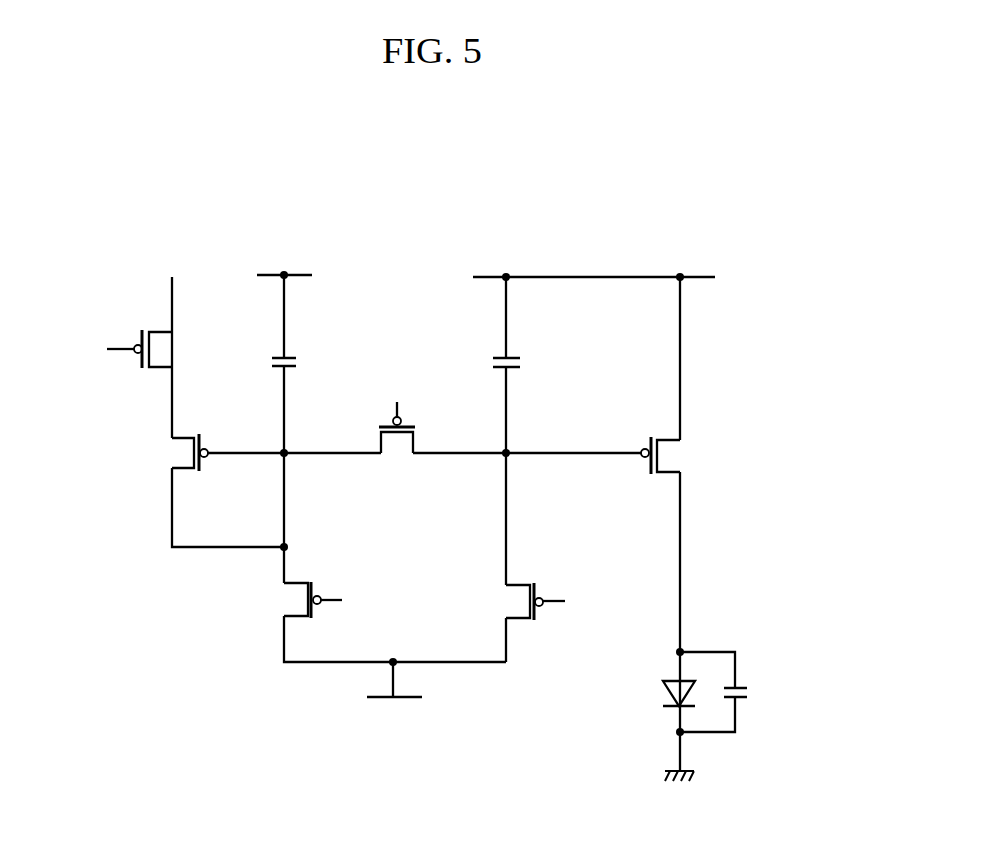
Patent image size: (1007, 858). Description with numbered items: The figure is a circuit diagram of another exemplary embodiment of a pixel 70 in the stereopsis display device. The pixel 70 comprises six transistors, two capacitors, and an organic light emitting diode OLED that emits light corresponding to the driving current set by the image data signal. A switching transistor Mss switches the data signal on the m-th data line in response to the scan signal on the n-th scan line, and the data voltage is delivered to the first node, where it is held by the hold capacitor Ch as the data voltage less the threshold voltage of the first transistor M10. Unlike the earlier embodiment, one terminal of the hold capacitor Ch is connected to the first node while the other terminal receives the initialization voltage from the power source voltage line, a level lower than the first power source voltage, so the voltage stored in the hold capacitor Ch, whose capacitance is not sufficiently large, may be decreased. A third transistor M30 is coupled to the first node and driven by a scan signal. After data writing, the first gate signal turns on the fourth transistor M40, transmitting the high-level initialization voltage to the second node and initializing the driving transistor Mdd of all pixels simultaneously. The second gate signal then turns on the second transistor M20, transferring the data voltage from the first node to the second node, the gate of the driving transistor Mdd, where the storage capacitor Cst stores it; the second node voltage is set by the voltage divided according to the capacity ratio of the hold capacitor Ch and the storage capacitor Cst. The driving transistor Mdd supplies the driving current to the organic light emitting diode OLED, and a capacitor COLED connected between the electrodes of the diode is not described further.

The pixel 70 is at (654, 209).
The switching transistor Mss is at (173, 349).
The first transistor M10 is at (166, 452).
The second transistor M20 is at (397, 444).
The third transistor M30 is at (279, 600).
The fourth transistor M40 is at (501, 601).
The driving transistor Mdd is at (684, 455).
The hold capacitor Ch is at (302, 361).
The storage capacitor Cst is at (526, 363).
The organic light emitting diode OLED is at (649, 693).
The capacitor C_OLED COLED is at (763, 691).